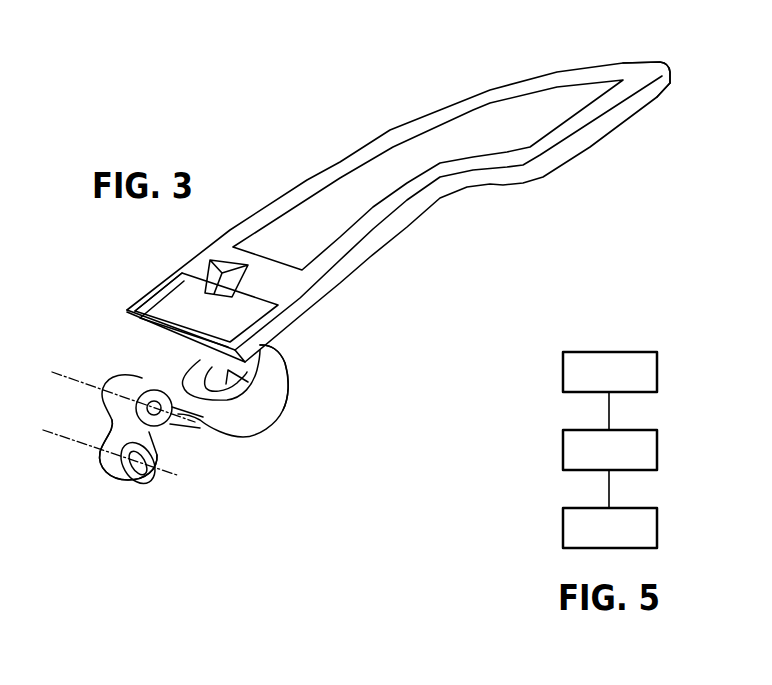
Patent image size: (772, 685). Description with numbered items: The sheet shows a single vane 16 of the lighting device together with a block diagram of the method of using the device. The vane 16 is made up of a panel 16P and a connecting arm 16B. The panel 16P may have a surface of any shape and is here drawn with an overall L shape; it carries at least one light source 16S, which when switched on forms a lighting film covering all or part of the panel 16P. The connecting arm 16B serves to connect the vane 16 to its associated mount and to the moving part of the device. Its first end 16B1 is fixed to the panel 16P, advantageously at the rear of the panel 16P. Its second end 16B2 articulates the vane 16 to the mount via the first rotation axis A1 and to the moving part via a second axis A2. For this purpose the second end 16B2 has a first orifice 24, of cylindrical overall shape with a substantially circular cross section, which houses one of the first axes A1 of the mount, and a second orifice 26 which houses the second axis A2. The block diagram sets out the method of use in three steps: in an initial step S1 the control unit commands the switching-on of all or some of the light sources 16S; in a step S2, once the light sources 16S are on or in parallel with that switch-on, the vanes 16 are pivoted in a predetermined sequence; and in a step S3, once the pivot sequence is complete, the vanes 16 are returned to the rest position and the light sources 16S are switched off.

In FIG. 3, the vane 16 is at (382, 107).
In FIG. 3, the light source 16S is at (322, 212).
In FIG. 3, the panel 16P is at (636, 73).
In FIG. 3, the connecting arm 16B is at (209, 446).
In FIG. 3, the first end 16B1 is at (298, 361).
In FIG. 3, the second end 16B2 is at (170, 493).
In FIG. 3, the first orifice 24 is at (157, 411).
In FIG. 3, the second orifice 26 is at (140, 466).
In FIG. 3, the first rotation axis A1 is at (67, 372).
In FIG. 3, the second axis A2 is at (58, 437).
In FIG. 5, the initial step S1 is at (660, 365).
In FIG. 5, the step S2 is at (660, 443).
In FIG. 5, the step S3 is at (660, 521).